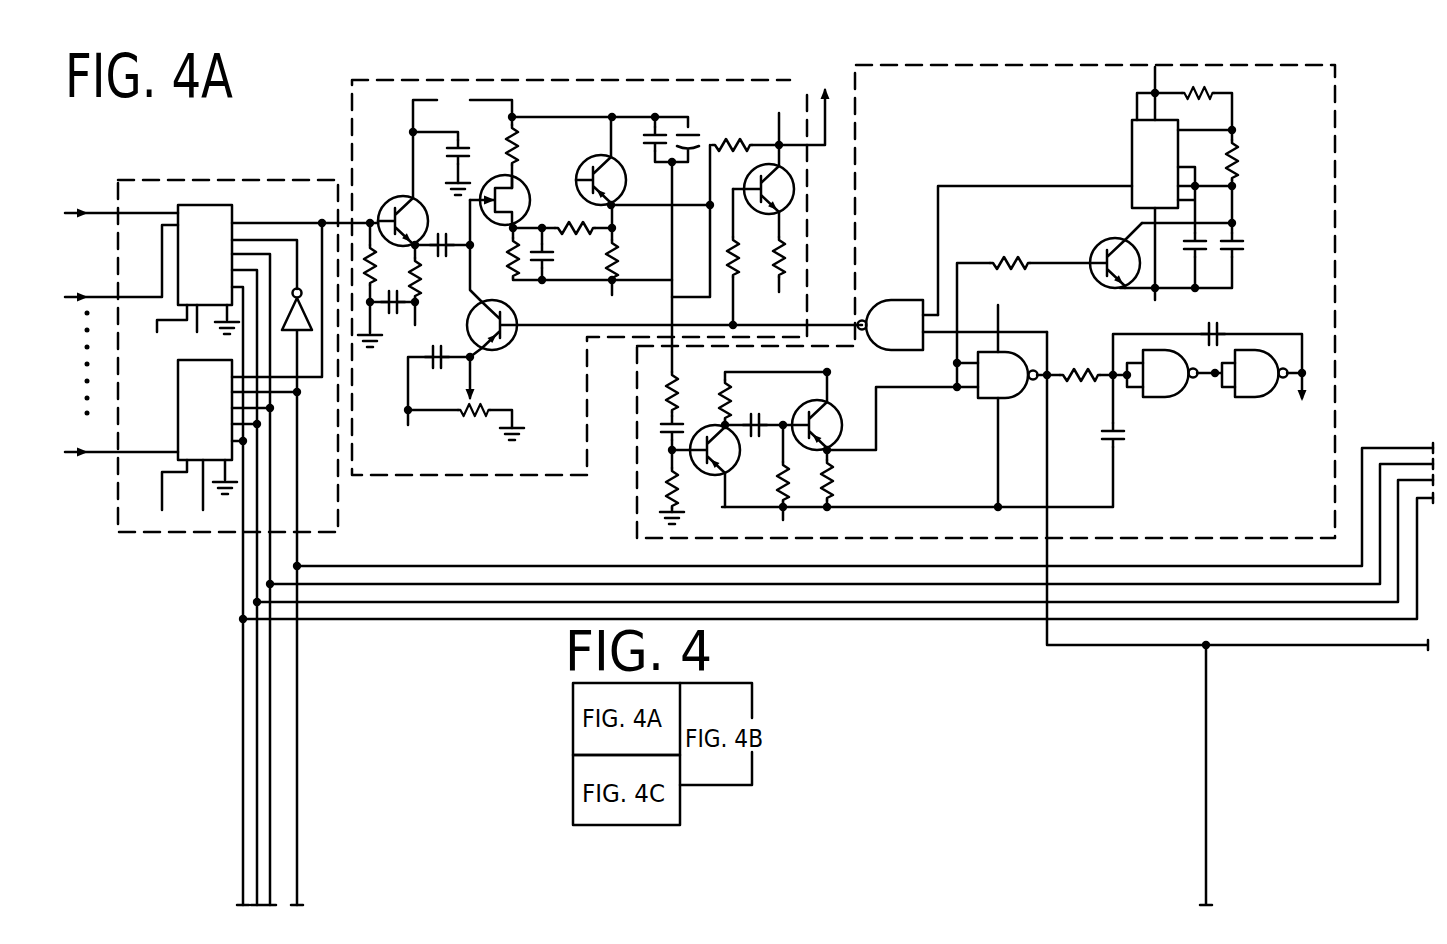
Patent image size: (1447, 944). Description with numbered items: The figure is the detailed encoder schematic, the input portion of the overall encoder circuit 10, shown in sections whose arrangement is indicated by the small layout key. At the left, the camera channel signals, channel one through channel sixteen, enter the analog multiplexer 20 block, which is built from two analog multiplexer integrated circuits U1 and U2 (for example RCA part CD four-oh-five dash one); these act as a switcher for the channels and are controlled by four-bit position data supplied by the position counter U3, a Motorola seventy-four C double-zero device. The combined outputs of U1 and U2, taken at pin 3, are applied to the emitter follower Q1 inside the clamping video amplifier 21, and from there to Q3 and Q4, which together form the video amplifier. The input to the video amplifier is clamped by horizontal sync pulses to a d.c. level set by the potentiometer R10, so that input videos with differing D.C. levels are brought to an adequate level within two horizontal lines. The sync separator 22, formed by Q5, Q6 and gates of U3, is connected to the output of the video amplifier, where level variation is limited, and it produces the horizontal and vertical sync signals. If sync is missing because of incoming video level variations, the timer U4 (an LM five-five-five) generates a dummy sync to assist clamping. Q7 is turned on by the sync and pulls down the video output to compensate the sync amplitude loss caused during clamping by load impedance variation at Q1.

The video signal processing circuit 10 is at (337, 128).
The analog multiplexer 20 is at (318, 176).
The clamping video amplifier 21 is at (685, 72).
The sync separator circuit 22 is at (1267, 63).
The pin 3 is at (305, 211).
The analog multiplexer U1 is at (205, 255).
The analog multiplexer U2 is at (205, 410).
The position counter U3 is at (1073, 349).
The timer U4 is at (1155, 164).
The emitter follower Q1 is at (396, 194).
The video amplifier transistor Q3 is at (556, 164).
The video amplifier transistor Q4 is at (591, 155).
The sync separator transistor Q5 is at (735, 468).
The sync separator transistor Q6 is at (803, 408).
The sync compensation transistor Q7 is at (757, 180).
The potentiometer R10 is at (484, 428).